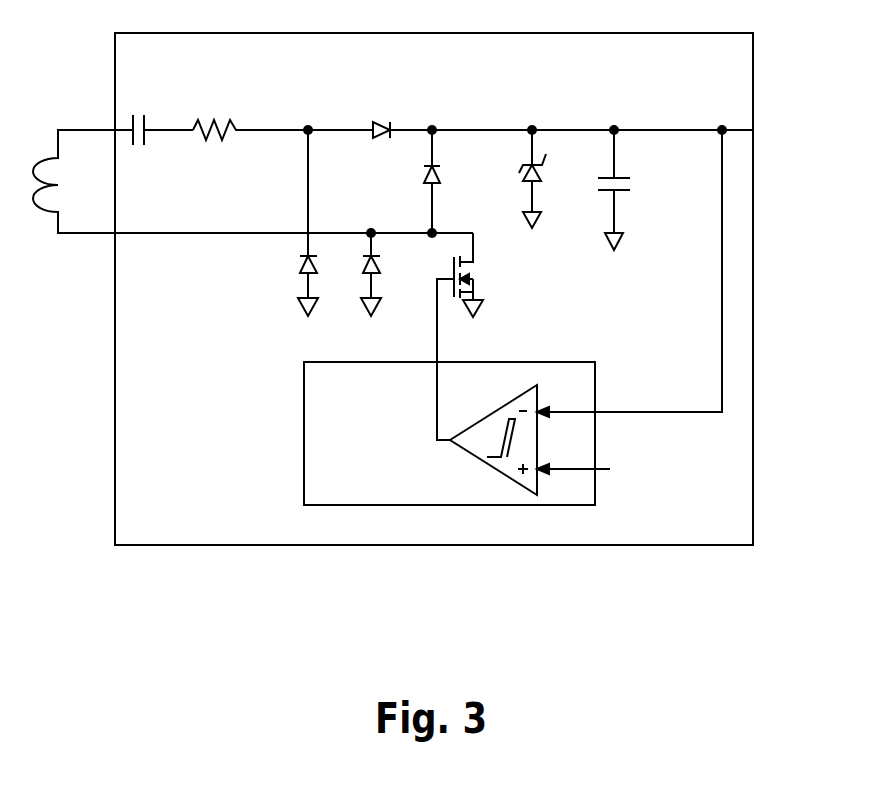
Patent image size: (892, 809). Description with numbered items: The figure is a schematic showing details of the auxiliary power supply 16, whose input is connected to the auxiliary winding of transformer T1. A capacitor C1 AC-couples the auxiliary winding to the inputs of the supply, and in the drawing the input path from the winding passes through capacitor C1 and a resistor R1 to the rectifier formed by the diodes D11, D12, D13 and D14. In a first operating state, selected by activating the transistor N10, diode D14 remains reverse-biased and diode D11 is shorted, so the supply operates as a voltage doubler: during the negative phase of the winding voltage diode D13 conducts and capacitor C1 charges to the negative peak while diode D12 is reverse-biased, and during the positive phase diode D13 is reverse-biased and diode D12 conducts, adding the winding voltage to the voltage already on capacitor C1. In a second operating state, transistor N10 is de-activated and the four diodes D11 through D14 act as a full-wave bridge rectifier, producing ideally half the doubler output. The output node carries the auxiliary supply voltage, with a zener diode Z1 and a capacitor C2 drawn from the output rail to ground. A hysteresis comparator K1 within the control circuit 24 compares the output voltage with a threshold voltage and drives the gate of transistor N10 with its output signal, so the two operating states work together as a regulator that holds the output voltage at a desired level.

The auxiliary power supply 16 is at (345, 67).
The control circuit 24 is at (346, 422).
The transformer T1 is at (76, 168).
The capacitor C1 is at (138, 114).
The resistor R1 is at (216, 112).
The diode D12 is at (400, 113).
The diode D13 is at (283, 223).
The diode D11 is at (396, 274).
The diode D14 is at (460, 181).
The zener diode Z1 is at (549, 179).
The capacitor C2 is at (630, 190).
The transistor N10 is at (498, 275).
The hysteresis comparator K1 is at (493, 438).